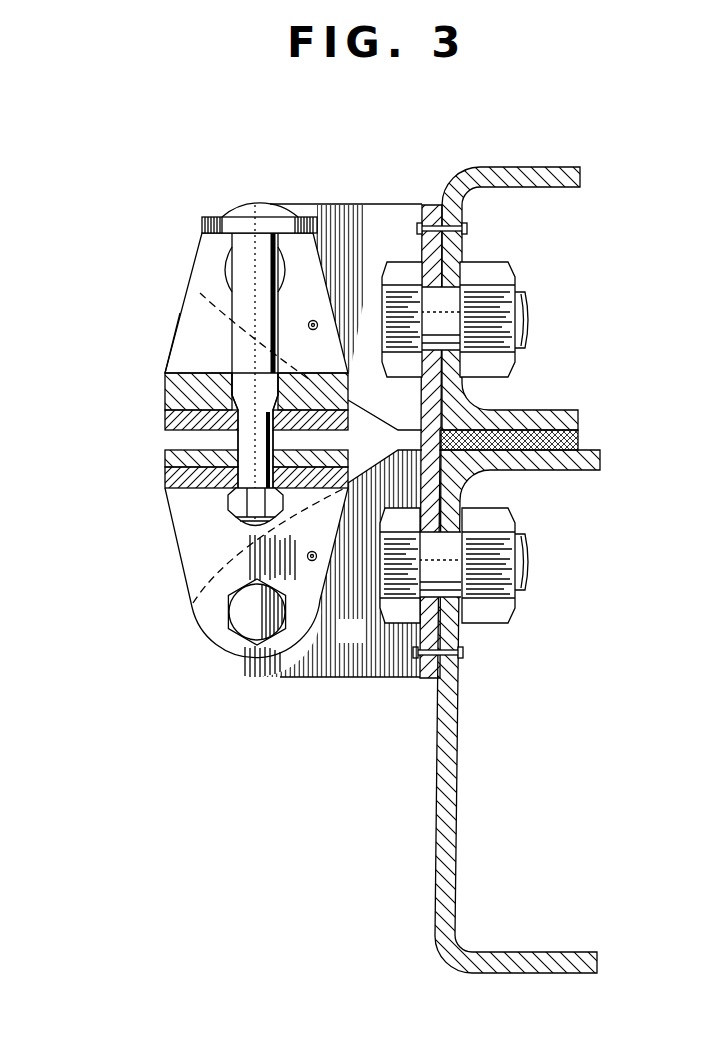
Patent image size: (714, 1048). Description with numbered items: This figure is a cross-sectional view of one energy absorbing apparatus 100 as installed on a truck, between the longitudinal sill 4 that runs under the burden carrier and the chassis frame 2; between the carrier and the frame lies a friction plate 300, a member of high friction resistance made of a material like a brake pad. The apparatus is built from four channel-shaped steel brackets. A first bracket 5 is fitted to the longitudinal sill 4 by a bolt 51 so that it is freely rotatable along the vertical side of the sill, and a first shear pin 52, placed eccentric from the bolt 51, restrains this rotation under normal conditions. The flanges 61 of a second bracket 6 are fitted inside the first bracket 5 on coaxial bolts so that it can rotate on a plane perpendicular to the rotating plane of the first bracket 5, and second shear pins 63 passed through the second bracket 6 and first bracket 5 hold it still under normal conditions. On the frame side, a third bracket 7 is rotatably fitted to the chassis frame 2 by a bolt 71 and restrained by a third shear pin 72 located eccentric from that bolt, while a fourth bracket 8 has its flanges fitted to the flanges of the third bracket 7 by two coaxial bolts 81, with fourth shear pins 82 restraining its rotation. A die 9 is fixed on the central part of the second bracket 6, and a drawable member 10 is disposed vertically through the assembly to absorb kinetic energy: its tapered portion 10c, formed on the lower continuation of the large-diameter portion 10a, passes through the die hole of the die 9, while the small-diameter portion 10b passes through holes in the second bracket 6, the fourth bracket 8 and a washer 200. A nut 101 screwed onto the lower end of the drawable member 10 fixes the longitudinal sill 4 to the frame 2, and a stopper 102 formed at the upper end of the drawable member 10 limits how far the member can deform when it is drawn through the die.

The chassis frame 2 is at (436, 788).
The longitudinal sill 4 is at (533, 167).
The first bracket 5 is at (359, 216).
The second bracket 6 is at (187, 318).
The third bracket 7 is at (312, 677).
The fourth bracket 8 is at (187, 553).
The die 9 is at (178, 394).
The drawable member 10 is at (228, 303).
The large-diameter portion 10a is at (240, 355).
The small-diameter portion 10b is at (240, 439).
The tapered portion 10c is at (296, 380).
The bolt 51 is at (388, 276).
The first shear pin 52 is at (466, 229).
The flanges 61 is at (176, 358).
The second shear pins 63 is at (313, 320).
The bolt 71 is at (393, 583).
The third shear pin 72 is at (463, 653).
The bolts 81 is at (238, 618).
The fourth shear pins 82 is at (306, 557).
The energy absorbing apparatus 100 is at (130, 419).
The nut 101 is at (228, 500).
The stopper 102 is at (243, 221).
The washer 200 is at (172, 479).
The friction plate 300 is at (578, 444).